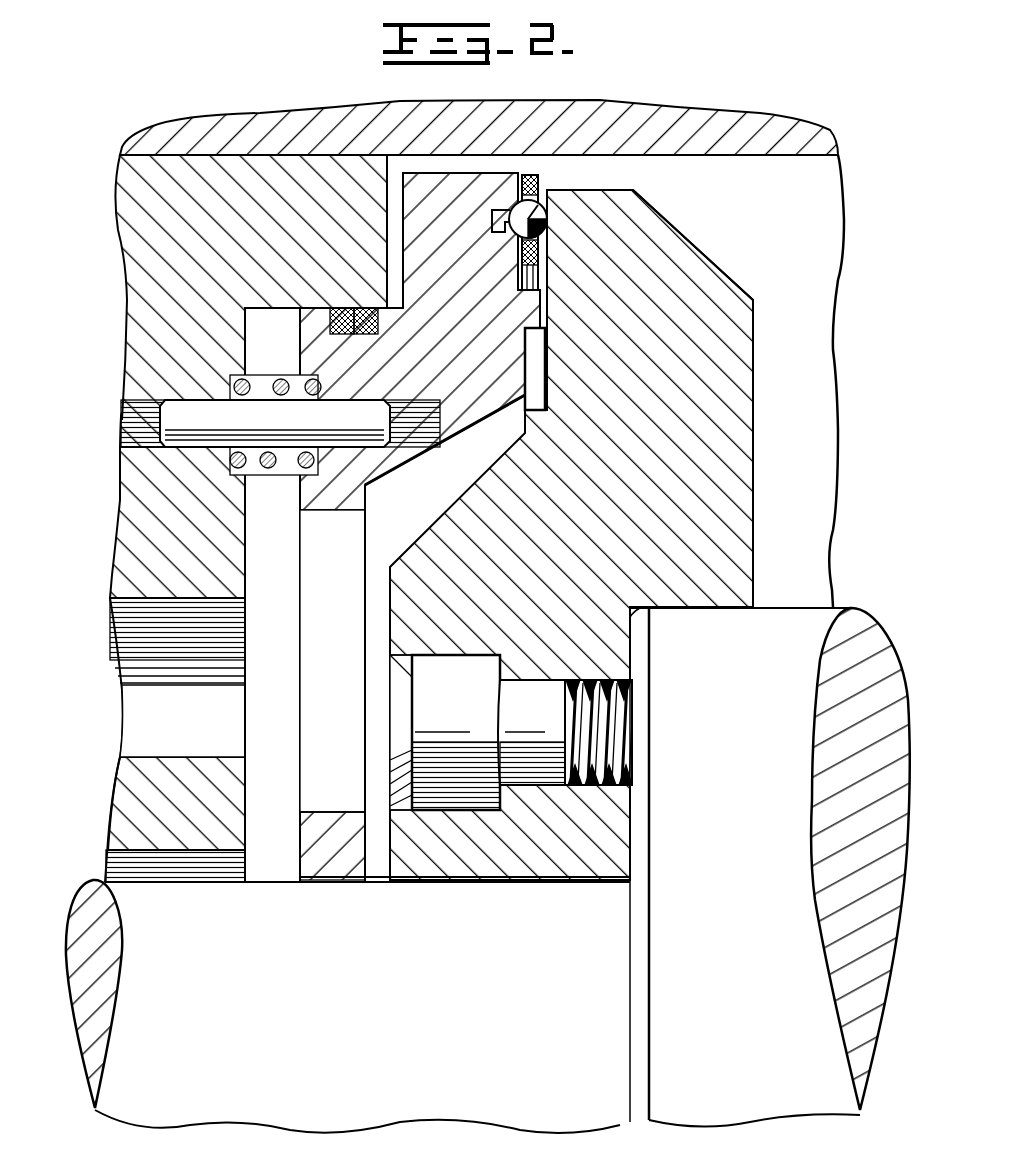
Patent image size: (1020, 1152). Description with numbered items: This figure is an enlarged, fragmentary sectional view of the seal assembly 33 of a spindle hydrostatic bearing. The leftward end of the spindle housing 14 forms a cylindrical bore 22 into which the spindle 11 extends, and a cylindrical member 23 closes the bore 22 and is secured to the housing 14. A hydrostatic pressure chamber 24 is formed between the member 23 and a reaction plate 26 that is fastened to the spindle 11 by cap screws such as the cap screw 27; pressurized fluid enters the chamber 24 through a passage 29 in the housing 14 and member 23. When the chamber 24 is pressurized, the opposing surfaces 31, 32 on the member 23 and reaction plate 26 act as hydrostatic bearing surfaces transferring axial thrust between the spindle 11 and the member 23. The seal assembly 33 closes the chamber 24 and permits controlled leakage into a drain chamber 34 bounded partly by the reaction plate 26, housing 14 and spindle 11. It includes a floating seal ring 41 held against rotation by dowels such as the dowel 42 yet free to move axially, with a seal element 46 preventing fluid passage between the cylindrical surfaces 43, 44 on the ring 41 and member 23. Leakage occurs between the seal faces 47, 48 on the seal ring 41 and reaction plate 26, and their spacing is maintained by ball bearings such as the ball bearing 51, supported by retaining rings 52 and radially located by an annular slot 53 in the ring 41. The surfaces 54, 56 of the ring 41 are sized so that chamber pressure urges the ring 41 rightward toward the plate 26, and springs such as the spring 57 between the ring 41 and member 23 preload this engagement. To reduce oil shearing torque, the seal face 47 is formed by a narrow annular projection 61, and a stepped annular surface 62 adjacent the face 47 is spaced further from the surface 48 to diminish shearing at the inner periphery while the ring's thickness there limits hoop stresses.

The spindle 11 is at (708, 813).
The spindle housing 14 is at (728, 124).
The cylindrical bore 22 is at (660, 162).
The cylindrical member 23 is at (145, 285).
The hydrostatic pressure chamber 24 is at (335, 662).
The reaction plate 26 is at (735, 495).
The cap screw 27 is at (468, 705).
The passage 29 is at (200, 737).
The opposing surface 31 is at (246, 588).
The opposing surface 32 is at (445, 515).
The seal assembly 33 is at (540, 186).
The drain chamber 34 is at (781, 215).
The floating seal ring 41 is at (460, 185).
The dowel 42 is at (192, 410).
The cylindrical surface 43 is at (395, 308).
The cylindrical surface 44 is at (278, 312).
The seal element 46 is at (364, 334).
The seal face 47 is at (547, 318).
The seal face 48 is at (524, 358).
The ball bearing 51 is at (545, 228).
The retaining ring 52 is at (535, 176).
The annular slot 53 is at (492, 228).
The surface 54 is at (300, 490).
The surface 56 is at (405, 470).
The spring 57 is at (292, 382).
The annular projection 61 is at (542, 297).
The stepped annular surface 62 is at (549, 366).